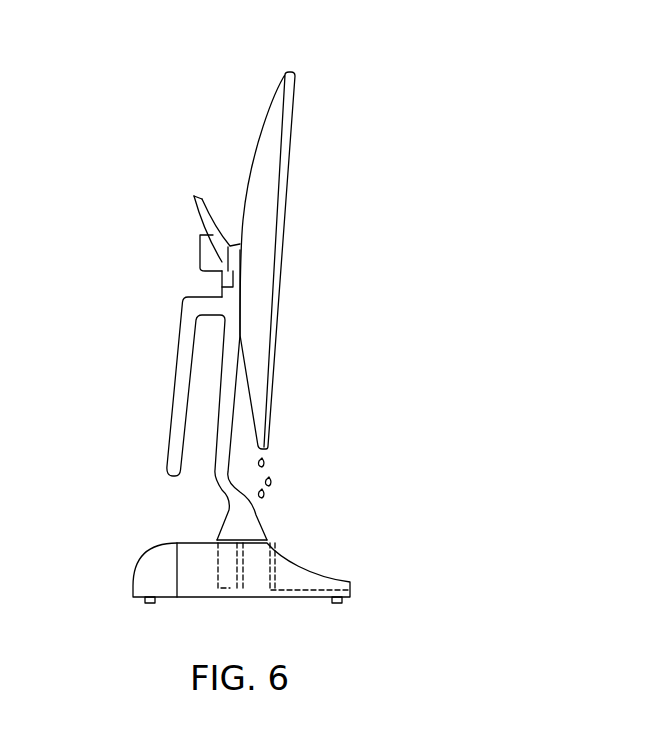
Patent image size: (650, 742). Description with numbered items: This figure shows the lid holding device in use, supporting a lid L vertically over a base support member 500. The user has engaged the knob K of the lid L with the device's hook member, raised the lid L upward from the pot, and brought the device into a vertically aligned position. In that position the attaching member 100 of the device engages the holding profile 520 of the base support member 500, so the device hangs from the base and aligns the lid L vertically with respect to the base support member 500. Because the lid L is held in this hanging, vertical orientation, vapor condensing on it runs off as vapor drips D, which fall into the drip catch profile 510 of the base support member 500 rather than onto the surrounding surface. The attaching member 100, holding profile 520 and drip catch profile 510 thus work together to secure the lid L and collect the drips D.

The lid L is at (260, 120).
The knob K is at (193, 245).
The attaching member 100 is at (167, 392).
The vapor drips D is at (270, 458).
The base support member 500 is at (223, 558).
The drip catch profile 510 is at (313, 553).
The holding profile 520 is at (227, 562).